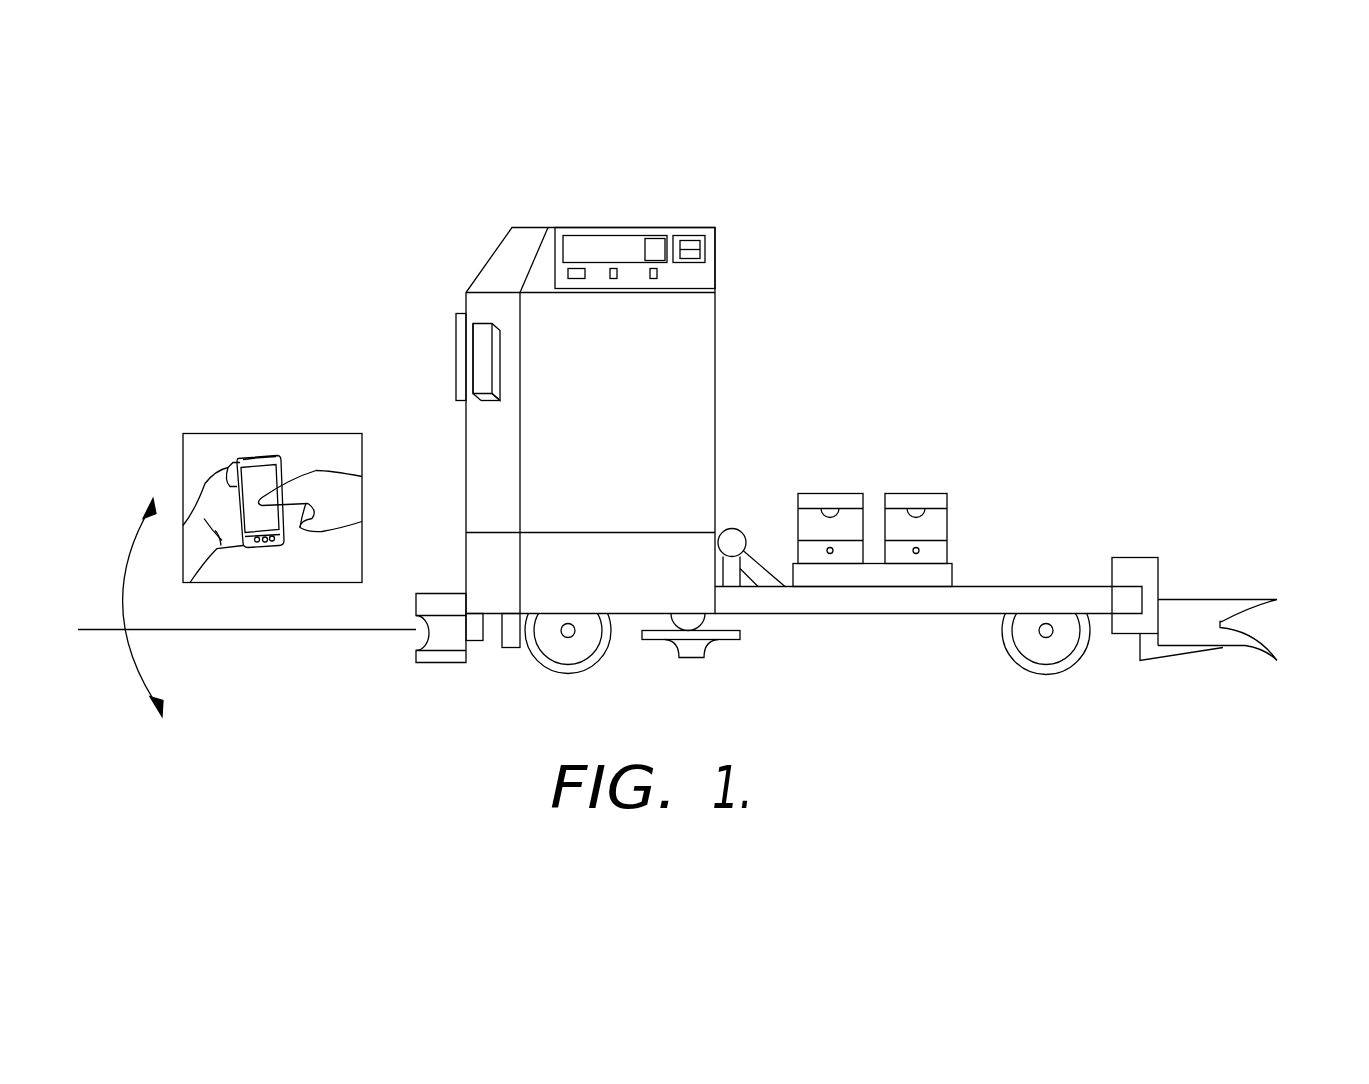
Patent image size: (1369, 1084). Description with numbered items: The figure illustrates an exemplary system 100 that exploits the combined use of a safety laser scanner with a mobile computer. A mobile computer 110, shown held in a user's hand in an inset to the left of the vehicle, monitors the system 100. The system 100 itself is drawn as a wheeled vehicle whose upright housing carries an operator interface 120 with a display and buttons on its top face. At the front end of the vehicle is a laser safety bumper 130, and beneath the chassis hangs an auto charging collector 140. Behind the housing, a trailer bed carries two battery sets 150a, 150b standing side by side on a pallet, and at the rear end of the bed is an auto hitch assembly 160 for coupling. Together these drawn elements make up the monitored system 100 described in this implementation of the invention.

The system 100 is at (1243, 290).
The mobile computer 110 is at (283, 433).
The operator interface 120 is at (613, 227).
The laser safety bumper 130 is at (438, 662).
The auto charging collector 140 is at (693, 660).
The battery set 150a is at (827, 493).
The battery set 150b is at (919, 493).
The auto hitch assembly 160 is at (1247, 646).